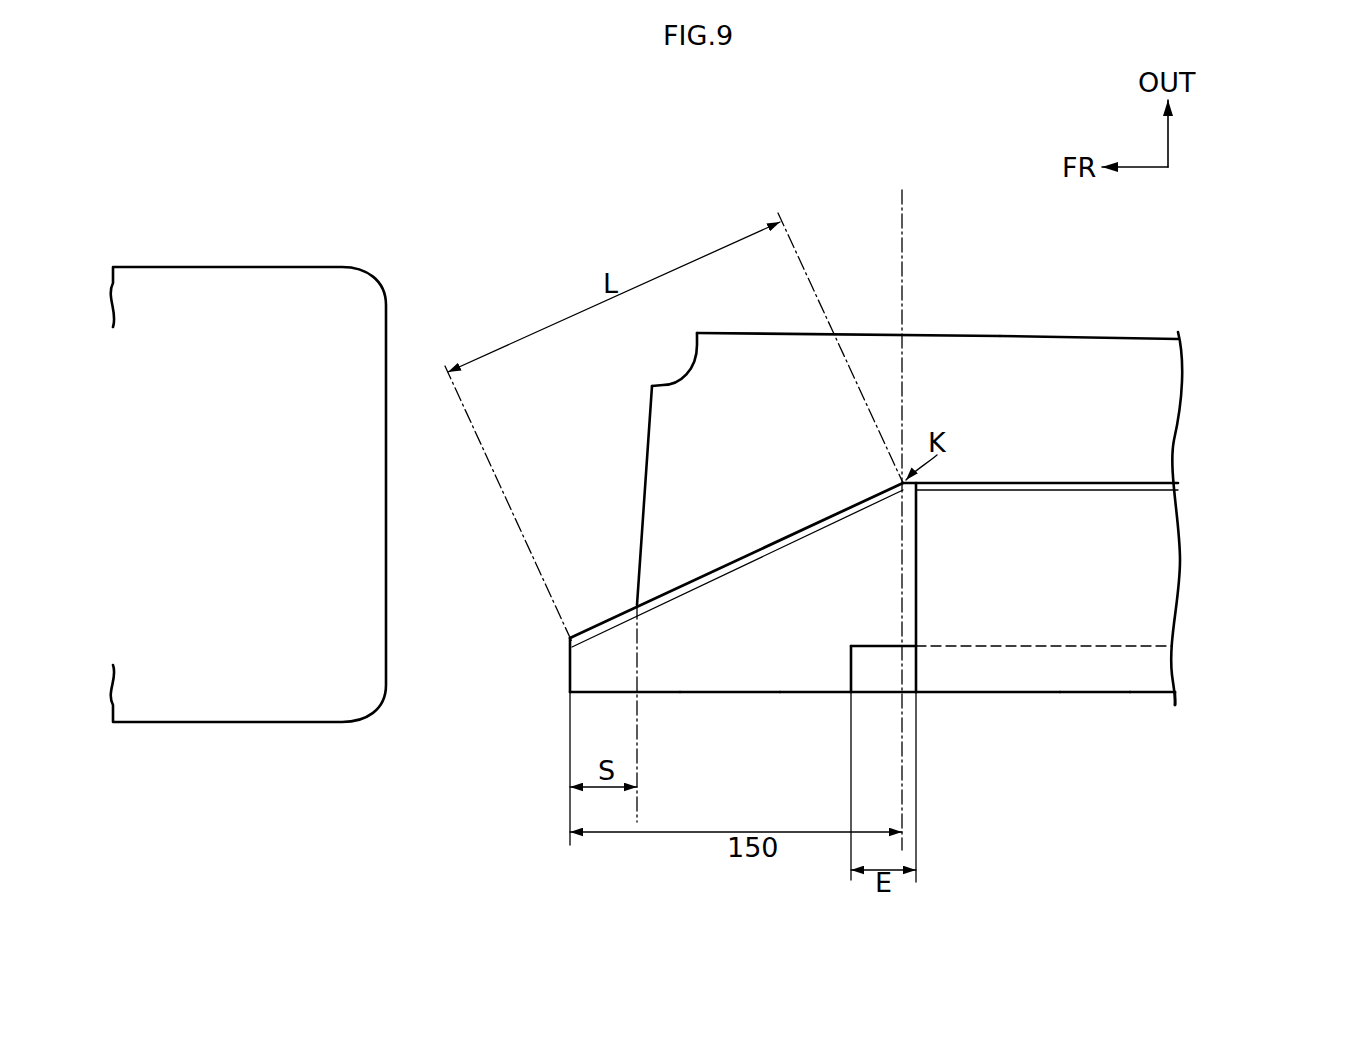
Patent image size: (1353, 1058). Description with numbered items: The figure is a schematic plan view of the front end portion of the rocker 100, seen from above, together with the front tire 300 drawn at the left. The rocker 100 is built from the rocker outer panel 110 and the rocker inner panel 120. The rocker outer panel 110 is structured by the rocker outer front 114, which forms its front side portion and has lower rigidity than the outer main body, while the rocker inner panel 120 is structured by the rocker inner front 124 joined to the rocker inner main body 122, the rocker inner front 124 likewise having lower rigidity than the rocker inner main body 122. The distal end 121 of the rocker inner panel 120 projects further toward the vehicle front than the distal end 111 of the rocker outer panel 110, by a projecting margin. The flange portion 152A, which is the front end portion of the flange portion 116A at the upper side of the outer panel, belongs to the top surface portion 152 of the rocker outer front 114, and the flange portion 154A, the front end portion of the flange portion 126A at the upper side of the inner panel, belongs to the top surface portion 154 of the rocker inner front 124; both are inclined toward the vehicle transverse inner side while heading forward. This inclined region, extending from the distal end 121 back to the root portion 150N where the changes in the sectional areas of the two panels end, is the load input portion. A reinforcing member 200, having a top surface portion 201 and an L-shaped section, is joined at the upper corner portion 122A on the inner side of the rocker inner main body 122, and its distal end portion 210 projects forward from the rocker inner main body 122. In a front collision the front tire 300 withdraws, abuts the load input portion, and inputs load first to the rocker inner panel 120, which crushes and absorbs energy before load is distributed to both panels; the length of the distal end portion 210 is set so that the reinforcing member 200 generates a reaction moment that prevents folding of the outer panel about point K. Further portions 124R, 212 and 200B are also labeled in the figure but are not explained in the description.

The front tire 300 is at (283, 283).
The rocker 100 is at (1188, 309).
The rocker outer panel 110 is at (1108, 336).
The rocker outer front 114 is at (988, 337).
The distal end of the rocker outer panel 111 is at (644, 473).
The top surface portion of the rocker outer front 152 is at (772, 368).
The flange portion of the rocker outer front 152A is at (770, 545).
The flange portion of the rocker inner front 154A is at (805, 533).
The distal end of the rocker inner panel 121 is at (570, 663).
The rear lower wall 124R is at (723, 728).
The top surface portion of the rocker inner front 154 is at (763, 695).
The rocker inner front 124 is at (805, 672).
The flange portion at the upper side of the rocker outer panel 116A is at (1086, 483).
The flange portion at the upper side of the rocker inner panel 126A is at (1130, 490).
The front wall of protrusion 212 is at (849, 655).
The distal end portion of the reinforcing member 210 is at (883, 657).
The reinforcing member 200 is at (882, 675).
The root portion 150N is at (888, 725).
The lower surface of energy absorbing member 200B is at (875, 676).
The top surface portion of the reinforcing member 201 is at (1148, 672).
The rocker inner main body 122 is at (1032, 668).
The rocker inner panel 120 is at (1122, 696).
The upper corner portion of the rocker inner main body 122A is at (1177, 691).